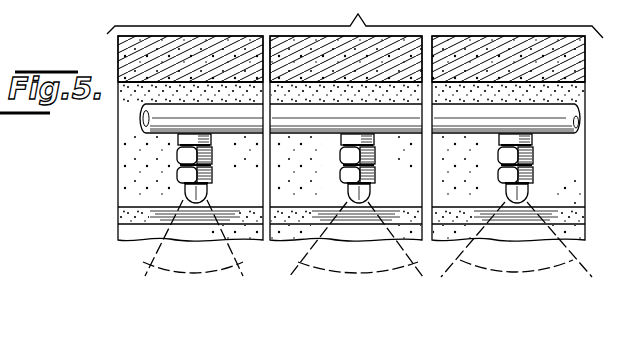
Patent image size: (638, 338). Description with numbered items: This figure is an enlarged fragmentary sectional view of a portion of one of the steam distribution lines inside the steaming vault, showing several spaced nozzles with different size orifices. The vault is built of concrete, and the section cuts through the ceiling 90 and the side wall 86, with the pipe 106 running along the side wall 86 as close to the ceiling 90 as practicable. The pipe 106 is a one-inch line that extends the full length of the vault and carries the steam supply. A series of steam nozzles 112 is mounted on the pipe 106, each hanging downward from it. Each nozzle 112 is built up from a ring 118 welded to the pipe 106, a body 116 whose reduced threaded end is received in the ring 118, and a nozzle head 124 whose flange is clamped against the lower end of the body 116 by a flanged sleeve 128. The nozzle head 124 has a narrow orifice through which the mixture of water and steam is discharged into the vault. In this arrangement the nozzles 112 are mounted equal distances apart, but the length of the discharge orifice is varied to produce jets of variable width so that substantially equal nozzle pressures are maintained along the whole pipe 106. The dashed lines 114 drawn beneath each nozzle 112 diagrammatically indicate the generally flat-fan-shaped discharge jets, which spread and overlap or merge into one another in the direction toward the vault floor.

The side wall 86 is at (117, 167).
The ceiling 90 is at (118, 57).
The pipe 106 is at (392, 133).
The steam nozzle 112 is at (172, 162).
The lines 114 is at (148, 267).
The body 116 is at (212, 170).
The ring 118 is at (211, 143).
The nozzle head 124 is at (183, 193).
The flanged sleeve 128 is at (212, 183).